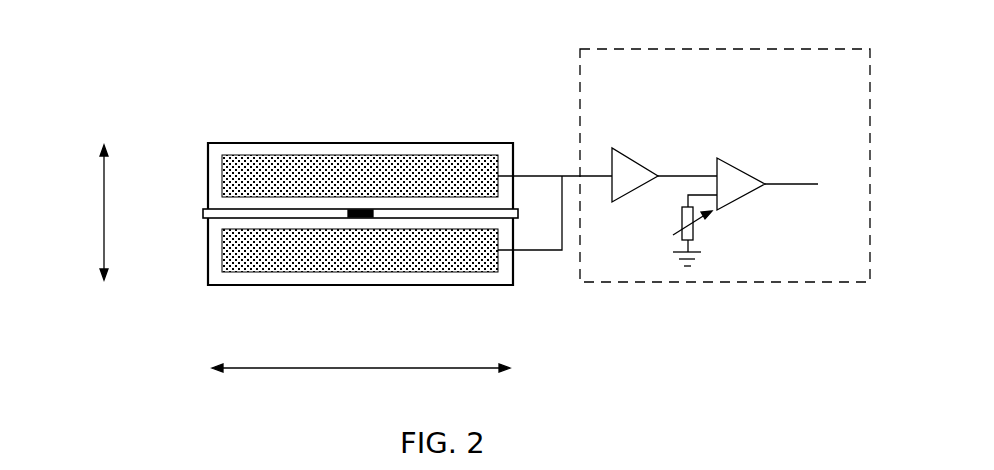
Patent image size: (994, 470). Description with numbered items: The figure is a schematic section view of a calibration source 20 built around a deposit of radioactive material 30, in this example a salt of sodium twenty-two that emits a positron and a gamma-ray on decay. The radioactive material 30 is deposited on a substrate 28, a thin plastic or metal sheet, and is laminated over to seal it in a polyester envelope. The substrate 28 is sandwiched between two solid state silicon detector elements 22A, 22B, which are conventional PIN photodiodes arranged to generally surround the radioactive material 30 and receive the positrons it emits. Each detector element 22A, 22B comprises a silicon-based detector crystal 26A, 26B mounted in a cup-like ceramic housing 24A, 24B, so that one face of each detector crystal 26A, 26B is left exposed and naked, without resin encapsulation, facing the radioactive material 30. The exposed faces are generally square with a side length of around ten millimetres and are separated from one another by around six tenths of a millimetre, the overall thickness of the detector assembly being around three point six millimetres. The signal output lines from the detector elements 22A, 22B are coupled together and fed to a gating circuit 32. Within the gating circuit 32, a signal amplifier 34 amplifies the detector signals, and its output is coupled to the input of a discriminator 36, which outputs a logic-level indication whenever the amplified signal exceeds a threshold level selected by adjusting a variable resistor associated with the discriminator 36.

The calibration source 20 is at (104, 132).
The solid state silicon detector element 22A is at (197, 145).
The solid state silicon detector element 22B is at (197, 220).
The ceramic housing 24A is at (242, 150).
The ceramic housing 24B is at (242, 280).
The detector crystal 26A is at (297, 168).
The detector crystal 26B is at (313, 257).
The substrate 28 is at (436, 213).
The radioactive material 30 is at (358, 212).
The gating circuit 32 is at (733, 49).
The signal amplifier 34 is at (624, 152).
The discriminator 36 is at (750, 160).